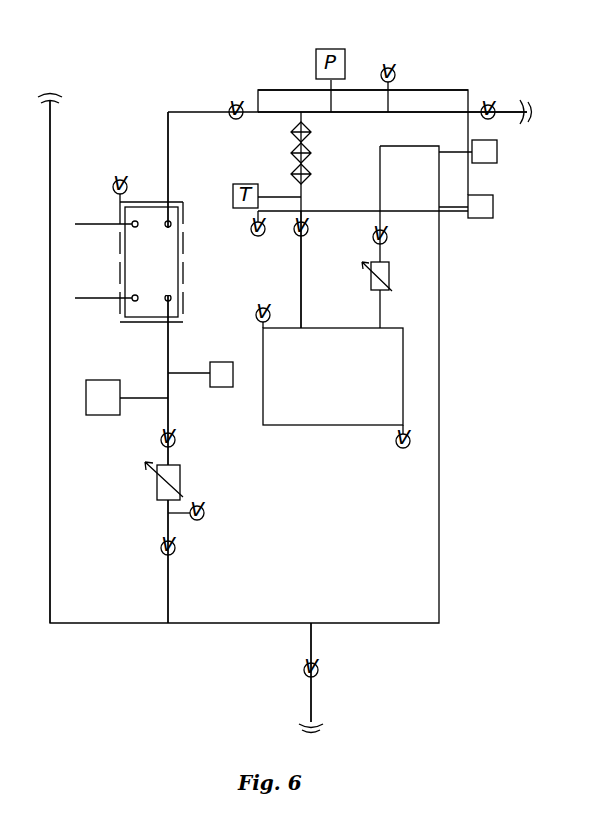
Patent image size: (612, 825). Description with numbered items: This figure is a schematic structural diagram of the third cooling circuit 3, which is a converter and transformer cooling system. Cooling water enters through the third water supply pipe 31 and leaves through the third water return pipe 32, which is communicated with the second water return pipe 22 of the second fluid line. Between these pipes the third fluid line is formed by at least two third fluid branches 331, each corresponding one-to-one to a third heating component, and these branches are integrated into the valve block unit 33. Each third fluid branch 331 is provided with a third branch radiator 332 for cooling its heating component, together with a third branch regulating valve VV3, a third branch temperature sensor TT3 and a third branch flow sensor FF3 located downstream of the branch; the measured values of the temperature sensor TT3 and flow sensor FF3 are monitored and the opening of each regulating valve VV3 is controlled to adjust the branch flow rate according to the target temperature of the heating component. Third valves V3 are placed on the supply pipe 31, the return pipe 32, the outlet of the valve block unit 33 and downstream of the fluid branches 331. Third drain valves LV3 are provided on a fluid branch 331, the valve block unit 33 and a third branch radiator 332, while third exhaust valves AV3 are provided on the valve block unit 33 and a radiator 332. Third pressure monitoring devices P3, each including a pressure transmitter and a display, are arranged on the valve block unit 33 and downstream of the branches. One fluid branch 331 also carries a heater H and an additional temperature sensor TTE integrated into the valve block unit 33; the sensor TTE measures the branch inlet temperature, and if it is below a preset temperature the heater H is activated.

The third cooling circuit 3 is at (268, 25).
The valve block unit 33 is at (300, 90).
The third water supply pipe 31 is at (520, 105).
The third water return pipe 32 is at (311, 710).
The second water return pipe 22 is at (50, 593).
The third fluid branch 331 is at (168, 140).
The third branch radiator 332 is at (132, 270).
The third valve V3 is at (233, 105).
The third exhaust valve AV3 is at (117, 183).
The additional temperature sensor TTE is at (245, 184).
The third branch temperature sensor TT3 is at (497, 207).
The third pressure monitoring device P3 is at (346, 60).
The heater H is at (305, 165).
The third drain valve LV3 is at (252, 232).
The third branch regulating valve VV3 is at (388, 240).
The third branch flow sensor FF3 is at (393, 275).